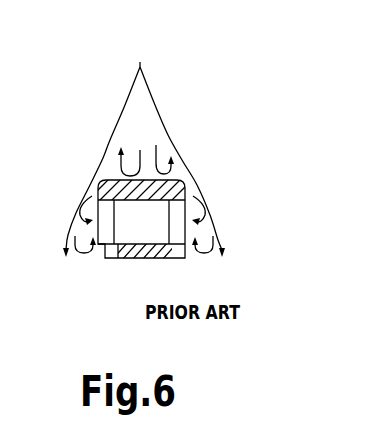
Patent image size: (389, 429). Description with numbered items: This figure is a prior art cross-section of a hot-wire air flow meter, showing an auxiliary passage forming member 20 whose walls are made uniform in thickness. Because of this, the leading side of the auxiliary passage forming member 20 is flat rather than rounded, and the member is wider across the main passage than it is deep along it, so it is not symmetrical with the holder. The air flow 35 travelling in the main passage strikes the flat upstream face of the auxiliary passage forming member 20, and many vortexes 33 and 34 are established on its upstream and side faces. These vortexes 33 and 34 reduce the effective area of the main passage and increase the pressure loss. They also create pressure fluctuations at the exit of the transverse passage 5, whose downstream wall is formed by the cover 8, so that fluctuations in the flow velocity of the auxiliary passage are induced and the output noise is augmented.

The transverse passage 5 is at (160, 237).
The cover 8 is at (123, 258).
The auxiliary passage forming member 20 is at (108, 190).
The vortexes 33 is at (155, 138).
The vortexes 34 is at (73, 220).
The air flow 35 is at (140, 67).